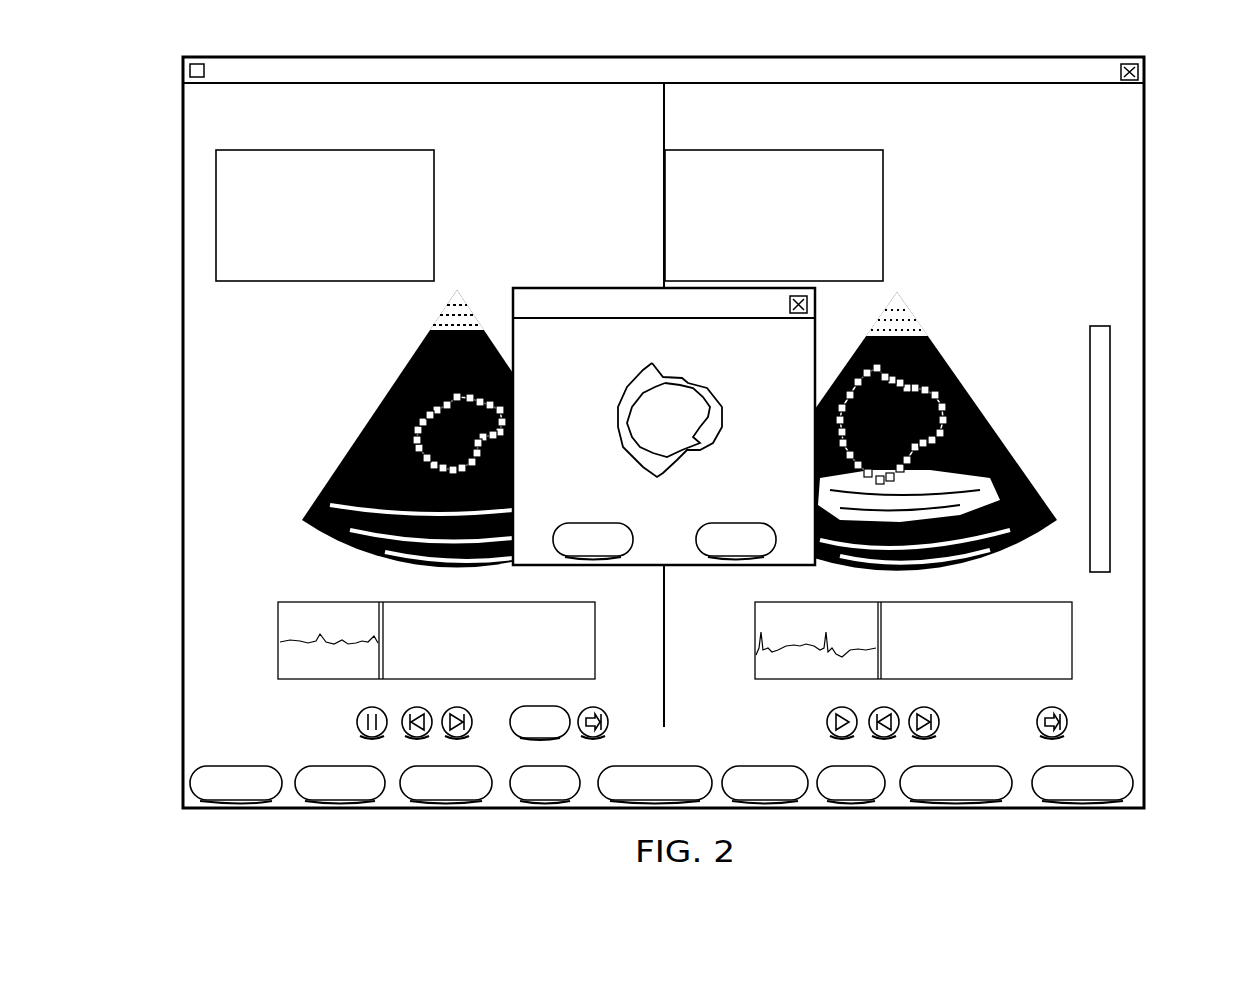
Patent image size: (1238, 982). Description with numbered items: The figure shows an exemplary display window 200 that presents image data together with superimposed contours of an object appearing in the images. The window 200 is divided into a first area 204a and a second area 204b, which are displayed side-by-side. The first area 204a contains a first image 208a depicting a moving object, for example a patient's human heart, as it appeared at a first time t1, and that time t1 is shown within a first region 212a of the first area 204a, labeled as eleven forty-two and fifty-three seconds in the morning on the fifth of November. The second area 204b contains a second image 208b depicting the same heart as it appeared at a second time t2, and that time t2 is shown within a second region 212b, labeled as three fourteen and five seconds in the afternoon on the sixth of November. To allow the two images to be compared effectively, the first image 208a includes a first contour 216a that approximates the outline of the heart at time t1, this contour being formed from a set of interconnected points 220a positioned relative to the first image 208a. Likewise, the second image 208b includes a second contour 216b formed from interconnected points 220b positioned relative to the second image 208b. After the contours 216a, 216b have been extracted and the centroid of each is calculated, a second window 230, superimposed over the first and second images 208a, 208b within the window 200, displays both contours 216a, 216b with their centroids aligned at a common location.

The display window 200 is at (150, 92).
The first area 204a is at (385, 515).
The second area 204b is at (947, 515).
The first image 208a is at (442, 428).
The second image 208b is at (905, 431).
The first region 212a is at (274, 215).
The second region 212b is at (746, 215).
The first contour 216a is at (404, 401).
The second contour 216b is at (936, 392).
The interconnected points 220a is at (455, 393).
The interconnected points 220b is at (897, 380).
The second window 230 is at (627, 286).
The first time t1 is at (286, 249).
The second time t2 is at (868, 254).